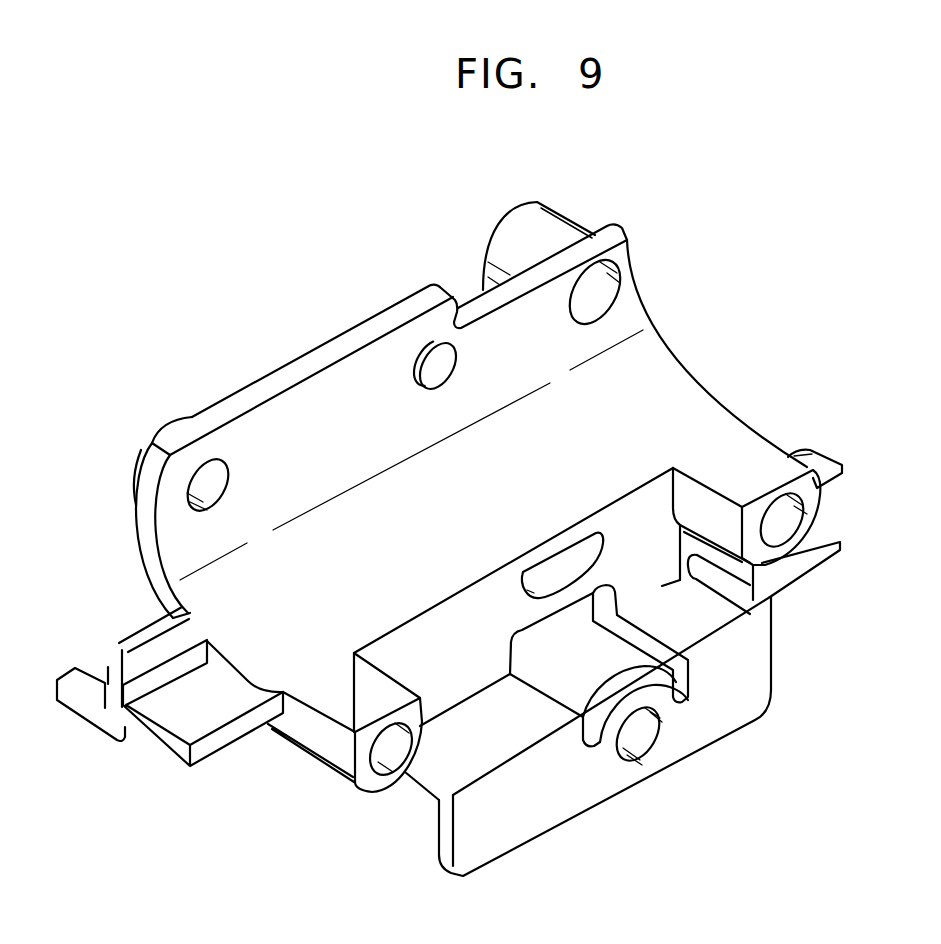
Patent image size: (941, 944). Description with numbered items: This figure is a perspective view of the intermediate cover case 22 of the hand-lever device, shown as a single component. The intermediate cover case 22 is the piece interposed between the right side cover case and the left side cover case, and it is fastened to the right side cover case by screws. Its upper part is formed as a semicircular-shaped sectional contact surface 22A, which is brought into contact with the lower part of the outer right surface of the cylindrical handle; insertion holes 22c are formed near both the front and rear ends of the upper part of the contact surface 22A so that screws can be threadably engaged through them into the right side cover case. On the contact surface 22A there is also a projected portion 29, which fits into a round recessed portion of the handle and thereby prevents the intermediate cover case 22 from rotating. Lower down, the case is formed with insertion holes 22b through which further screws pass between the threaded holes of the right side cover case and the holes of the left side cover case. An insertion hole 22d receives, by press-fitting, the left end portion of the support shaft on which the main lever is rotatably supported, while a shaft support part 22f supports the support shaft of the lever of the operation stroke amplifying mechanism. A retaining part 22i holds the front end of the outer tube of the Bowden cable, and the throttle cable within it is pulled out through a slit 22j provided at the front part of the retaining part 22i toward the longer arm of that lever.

The intermediate cover case 22 is at (367, 313).
The contact surface 22A is at (300, 417).
The insertion holes 22c is at (208, 452).
The projected portion 29 is at (445, 372).
The insertion holes 22b is at (775, 522).
The retaining part 22i is at (770, 566).
The slit 22j is at (712, 572).
The insertion hole 22d is at (641, 742).
The shaft support part 22f is at (100, 672).